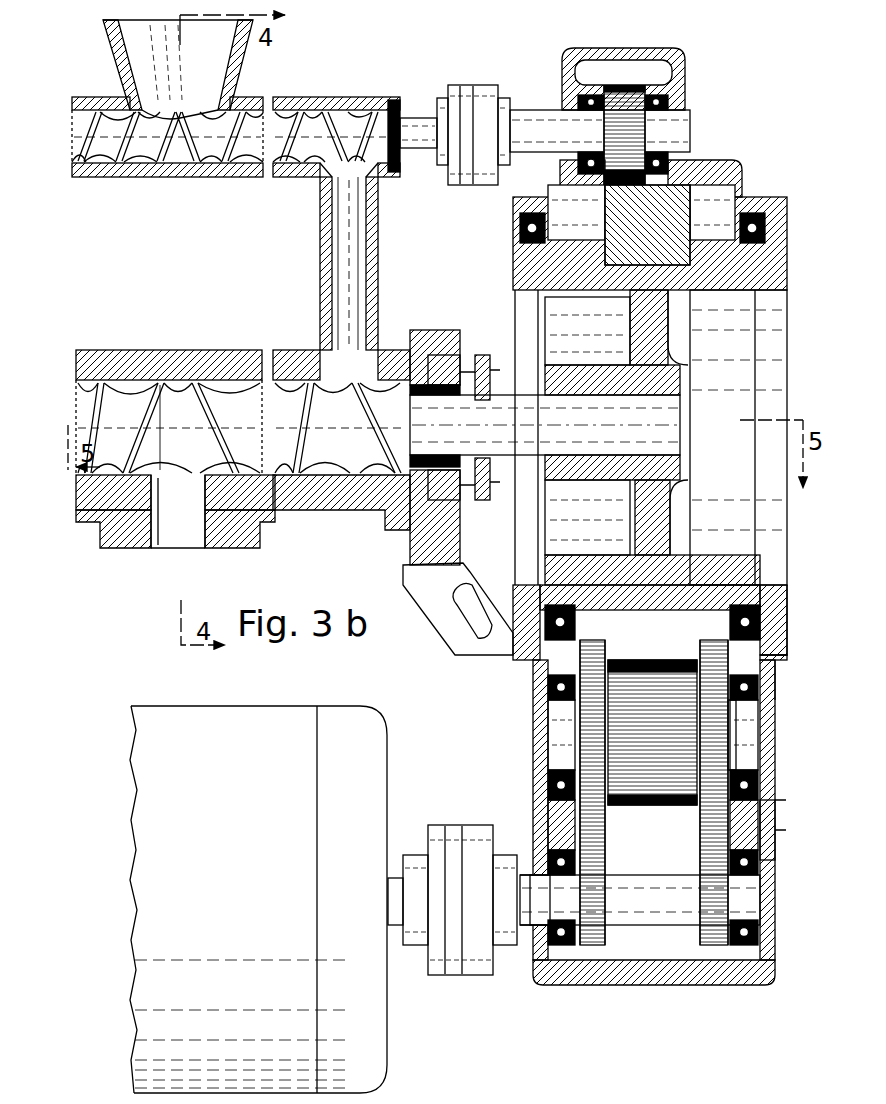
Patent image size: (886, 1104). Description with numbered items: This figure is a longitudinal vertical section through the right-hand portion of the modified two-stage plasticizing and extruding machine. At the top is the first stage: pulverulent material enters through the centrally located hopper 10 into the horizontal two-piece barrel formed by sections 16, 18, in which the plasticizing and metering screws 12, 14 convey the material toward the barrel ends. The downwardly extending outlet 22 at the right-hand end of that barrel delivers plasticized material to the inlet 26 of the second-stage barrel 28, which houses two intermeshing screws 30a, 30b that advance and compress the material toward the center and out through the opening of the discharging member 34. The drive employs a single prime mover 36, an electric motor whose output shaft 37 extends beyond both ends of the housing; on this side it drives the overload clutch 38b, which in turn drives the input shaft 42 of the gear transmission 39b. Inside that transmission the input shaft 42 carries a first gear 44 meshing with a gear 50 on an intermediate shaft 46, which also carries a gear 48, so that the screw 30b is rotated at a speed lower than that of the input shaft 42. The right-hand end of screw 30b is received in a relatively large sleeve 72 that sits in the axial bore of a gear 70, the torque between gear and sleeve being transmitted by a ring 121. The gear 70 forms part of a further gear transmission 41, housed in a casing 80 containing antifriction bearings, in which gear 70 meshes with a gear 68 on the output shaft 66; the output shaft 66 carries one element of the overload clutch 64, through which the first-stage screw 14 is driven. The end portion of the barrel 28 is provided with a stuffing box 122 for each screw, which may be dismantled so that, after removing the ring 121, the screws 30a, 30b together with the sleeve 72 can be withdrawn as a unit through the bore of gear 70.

The hopper 10 is at (215, 80).
The plasticizing and metering screw 12 is at (297, 180).
The plasticizing and metering screw 14 is at (425, 118).
The barrel section 16 is at (130, 177).
The barrel section 18 is at (96, 97).
The outlet 22 is at (350, 165).
The inlet 26 is at (350, 380).
The barrel 28 is at (190, 350).
The screw 30a is at (350, 450).
The screw 30b is at (482, 395).
The discharging member 34 is at (165, 545).
The prime mover 36 is at (256, 722).
The output shaft 37 is at (398, 878).
The overload clutch 38b is at (475, 825).
The gear transmission 39b is at (518, 688).
The gear transmission 41 is at (708, 152).
The input shaft 42 is at (655, 905).
The first gear 44 is at (590, 945).
The intermediate shaft 46 is at (745, 752).
The gear 48 is at (655, 775).
The gear 50 is at (585, 728).
The overload clutch 64 is at (483, 85).
The output shaft 66 is at (685, 120).
The gear 68 is at (625, 80).
The gear 70 is at (665, 205).
The sleeve 72 is at (720, 286).
The casing 80 is at (762, 820).
The ring 121 is at (792, 600).
The stuffing box 122 is at (458, 498).